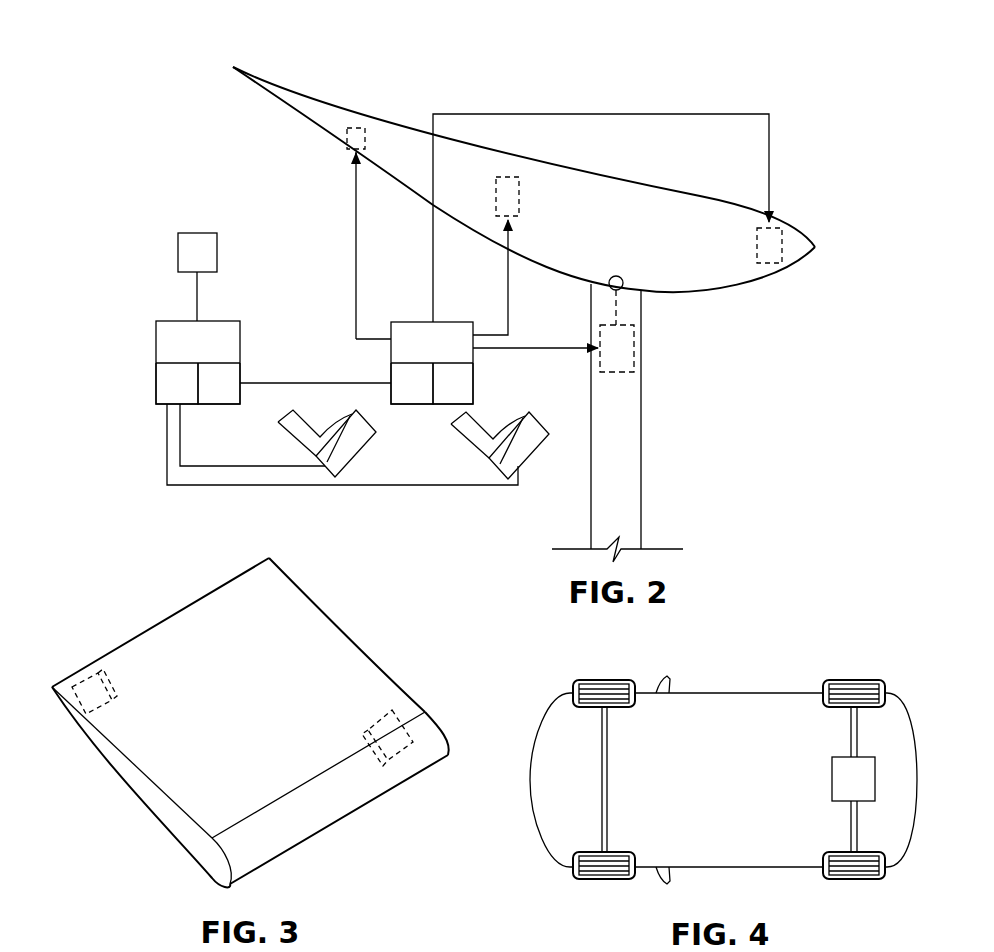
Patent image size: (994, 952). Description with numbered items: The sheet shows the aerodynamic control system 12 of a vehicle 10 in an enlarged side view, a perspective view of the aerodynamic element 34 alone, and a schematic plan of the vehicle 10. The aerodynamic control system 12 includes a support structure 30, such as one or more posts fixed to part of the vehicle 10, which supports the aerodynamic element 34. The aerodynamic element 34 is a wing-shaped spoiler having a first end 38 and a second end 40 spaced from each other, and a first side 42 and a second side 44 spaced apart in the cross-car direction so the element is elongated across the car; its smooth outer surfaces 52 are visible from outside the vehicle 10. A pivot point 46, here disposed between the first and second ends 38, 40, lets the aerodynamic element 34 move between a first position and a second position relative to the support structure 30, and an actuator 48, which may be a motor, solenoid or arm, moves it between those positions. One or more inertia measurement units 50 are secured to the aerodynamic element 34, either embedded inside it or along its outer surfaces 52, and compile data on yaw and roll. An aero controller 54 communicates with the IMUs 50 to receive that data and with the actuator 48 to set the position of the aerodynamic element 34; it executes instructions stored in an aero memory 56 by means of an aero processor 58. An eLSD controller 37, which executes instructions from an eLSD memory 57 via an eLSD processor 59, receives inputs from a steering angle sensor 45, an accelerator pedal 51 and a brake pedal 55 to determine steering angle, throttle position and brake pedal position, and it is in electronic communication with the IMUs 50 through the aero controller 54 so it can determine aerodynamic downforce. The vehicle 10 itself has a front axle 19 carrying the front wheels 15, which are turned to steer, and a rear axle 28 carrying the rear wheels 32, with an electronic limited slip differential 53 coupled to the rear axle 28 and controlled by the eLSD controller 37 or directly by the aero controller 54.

In FIG. 4, the vehicle 10 is at (768, 650).
In FIG. 2, the aerodynamic control system 12 is at (333, 55).
In FIG. 4, the front wheels 15 is at (605, 680).
In FIG. 4, the front axle 19 is at (600, 780).
In FIG. 4, the rear axle 28 is at (848, 727).
In FIG. 2, the support structure 30 is at (616, 447).
In FIG. 4, the rear wheels 32 is at (855, 680).
In FIG. 2, the aerodynamic element 34 is at (534, 178).
In FIG. 3, the aerodynamic element 34 is at (241, 731).
In FIG. 2, the eLSD controller 37 is at (163, 359).
In FIG. 2, the first end 38 is at (812, 250).
In FIG. 3, the first end 38 is at (335, 822).
In FIG. 2, the second end 40 is at (233, 67).
In FIG. 3, the second end 40 is at (105, 655).
In FIG. 3, the first side 42 is at (425, 700).
In FIG. 3, the second side 44 is at (203, 865).
In FIG. 2, the steering angle sensor 45 is at (178, 253).
In FIG. 2, the pivot point 46 is at (618, 277).
In FIG. 2, the actuator 48 is at (634, 350).
In FIG. 2, the inertia measurement unit 50 is at (358, 125).
In FIG. 3, the inertia measurement unit 50 is at (105, 680).
In FIG. 2, the accelerator pedal 51 is at (355, 460).
In FIG. 2, the outer surfaces 52 is at (403, 130).
In FIG. 3, the outer surfaces 52 is at (310, 647).
In FIG. 4, the electronic limited slip differential 53 is at (832, 780).
In FIG. 2, the aero controller 54 is at (356, 363).
In FIG. 2, the brake pedal 55 is at (527, 462).
In FIG. 2, the aero memory 56 is at (425, 396).
In FIG. 2, the eLSD memory 57 is at (190, 396).
In FIG. 2, the aero processor 58 is at (466, 396).
In FIG. 2, the eLSD processor 59 is at (232, 396).